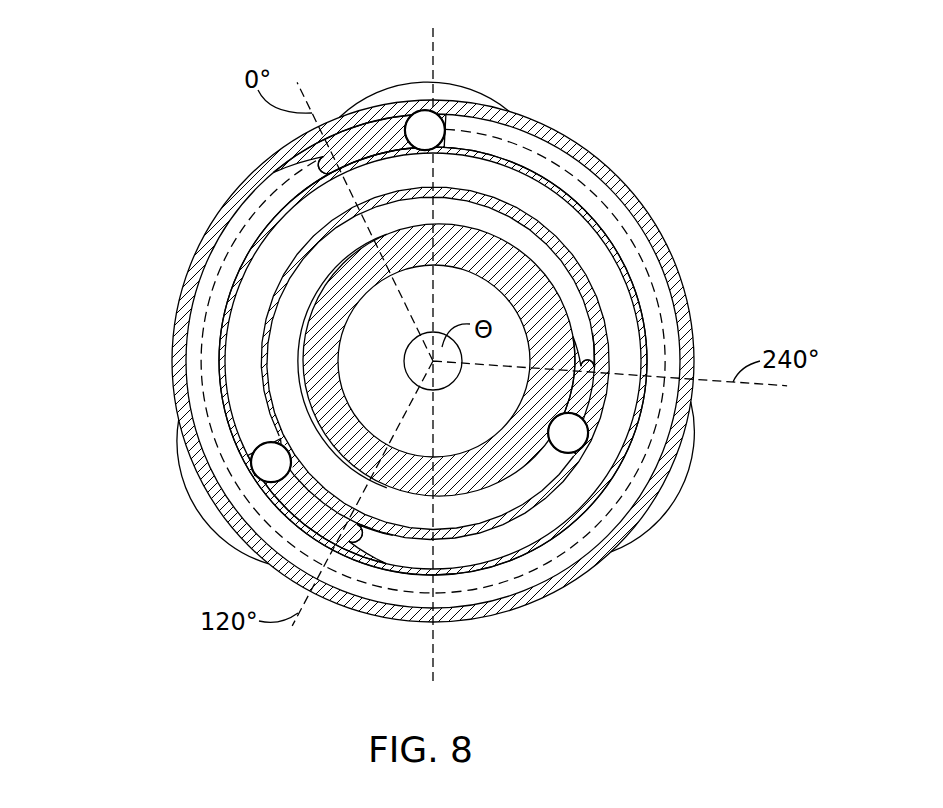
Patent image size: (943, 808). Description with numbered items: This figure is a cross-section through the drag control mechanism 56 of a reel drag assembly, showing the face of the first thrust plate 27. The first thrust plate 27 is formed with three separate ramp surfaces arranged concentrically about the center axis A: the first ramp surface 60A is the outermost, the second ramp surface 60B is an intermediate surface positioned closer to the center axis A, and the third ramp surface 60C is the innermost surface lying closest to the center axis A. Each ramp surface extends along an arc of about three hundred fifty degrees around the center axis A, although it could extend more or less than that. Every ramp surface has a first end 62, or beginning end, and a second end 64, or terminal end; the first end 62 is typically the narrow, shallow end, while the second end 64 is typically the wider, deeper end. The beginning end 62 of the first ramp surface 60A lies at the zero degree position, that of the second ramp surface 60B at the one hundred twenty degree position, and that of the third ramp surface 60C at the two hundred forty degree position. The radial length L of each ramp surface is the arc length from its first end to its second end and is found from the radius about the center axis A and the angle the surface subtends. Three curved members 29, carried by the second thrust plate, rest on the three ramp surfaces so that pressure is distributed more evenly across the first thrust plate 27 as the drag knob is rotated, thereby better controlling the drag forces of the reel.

The first thrust plate 27 is at (176, 288).
The curved member 29 is at (444, 112).
The drag control mechanism 56 is at (146, 96).
The first ramp surface 60A is at (536, 152).
The second ramp surface 60B is at (578, 226).
The third ramp surface 60C is at (537, 480).
The first end 62 is at (328, 144).
The second end 64 is at (405, 125).
The center axis A is at (438, 368).
The radial length L is at (197, 356).